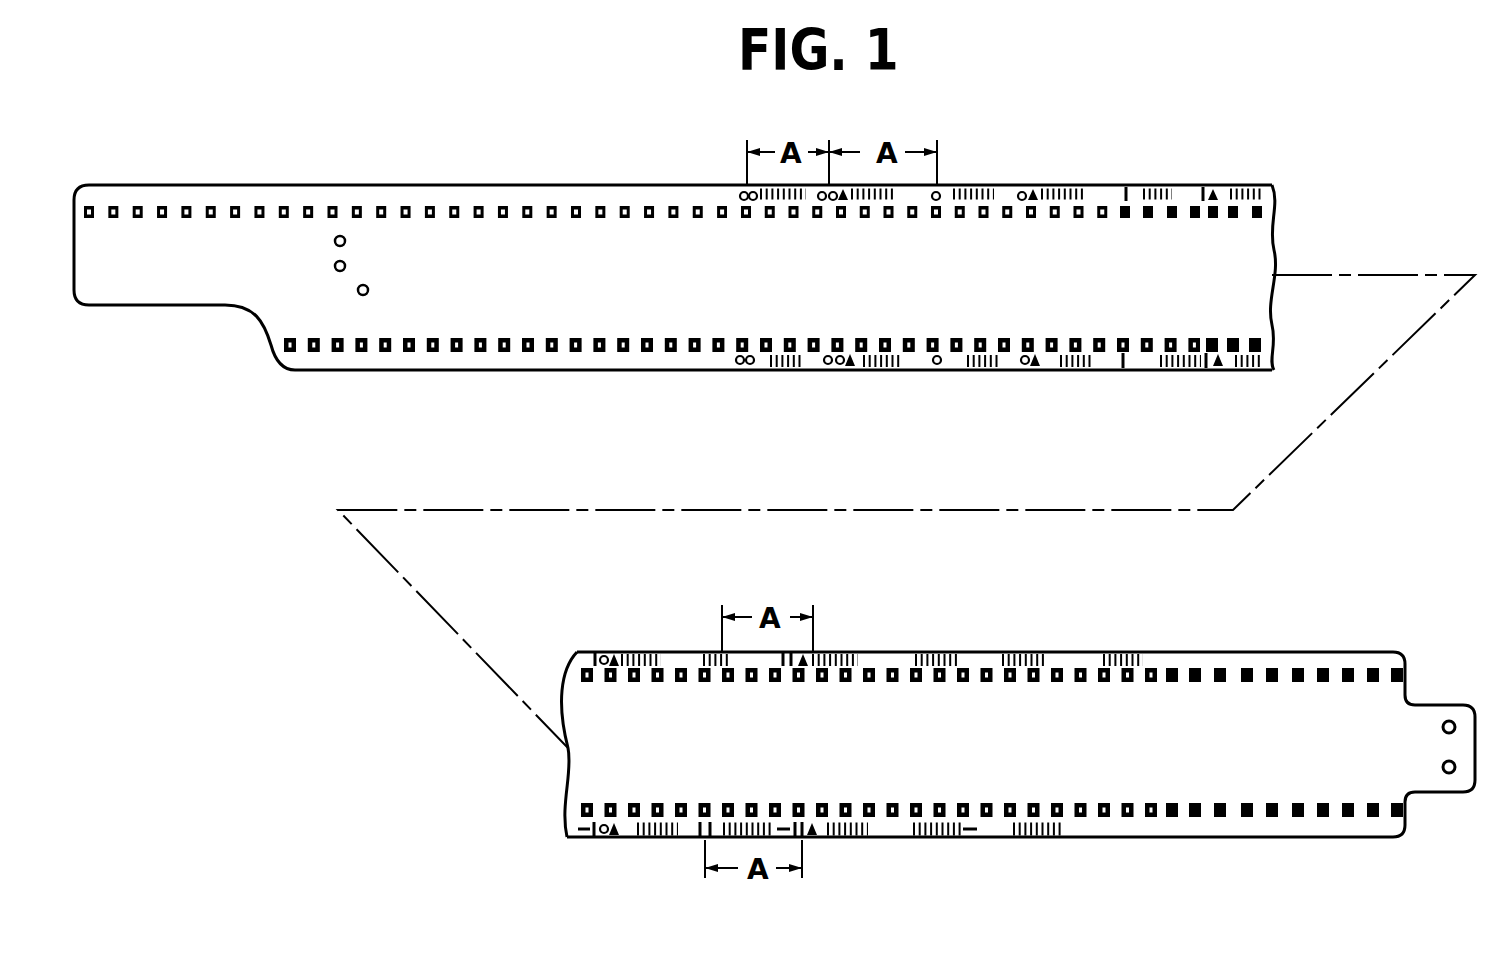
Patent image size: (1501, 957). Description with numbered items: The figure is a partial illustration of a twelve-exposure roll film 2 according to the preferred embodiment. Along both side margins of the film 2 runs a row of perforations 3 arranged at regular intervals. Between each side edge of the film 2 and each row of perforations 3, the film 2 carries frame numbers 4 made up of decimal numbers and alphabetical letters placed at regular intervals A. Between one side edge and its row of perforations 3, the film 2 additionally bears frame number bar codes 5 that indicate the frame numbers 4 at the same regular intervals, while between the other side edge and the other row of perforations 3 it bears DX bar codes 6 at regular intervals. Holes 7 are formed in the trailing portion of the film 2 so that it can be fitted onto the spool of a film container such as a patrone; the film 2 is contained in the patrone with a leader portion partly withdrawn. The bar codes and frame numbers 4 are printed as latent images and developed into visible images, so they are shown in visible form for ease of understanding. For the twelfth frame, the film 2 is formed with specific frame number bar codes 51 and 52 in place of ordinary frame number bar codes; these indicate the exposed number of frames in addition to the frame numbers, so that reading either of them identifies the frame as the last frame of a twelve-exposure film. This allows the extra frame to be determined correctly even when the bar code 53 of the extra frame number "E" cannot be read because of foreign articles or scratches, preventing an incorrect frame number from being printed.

The 12-exposure roll film 2 is at (476, 180).
The perforations 3 is at (505, 350).
The frame numbers 4 is at (1033, 185).
The frame number bar codes 5 is at (1087, 179).
The DX bar codes 6 is at (910, 378).
The holes 7 is at (1449, 775).
The specific frame number bar code 51 is at (957, 647).
The specific frame number bar code 52 is at (1045, 647).
The bar code of extra frame number "E" 53 is at (1143, 647).